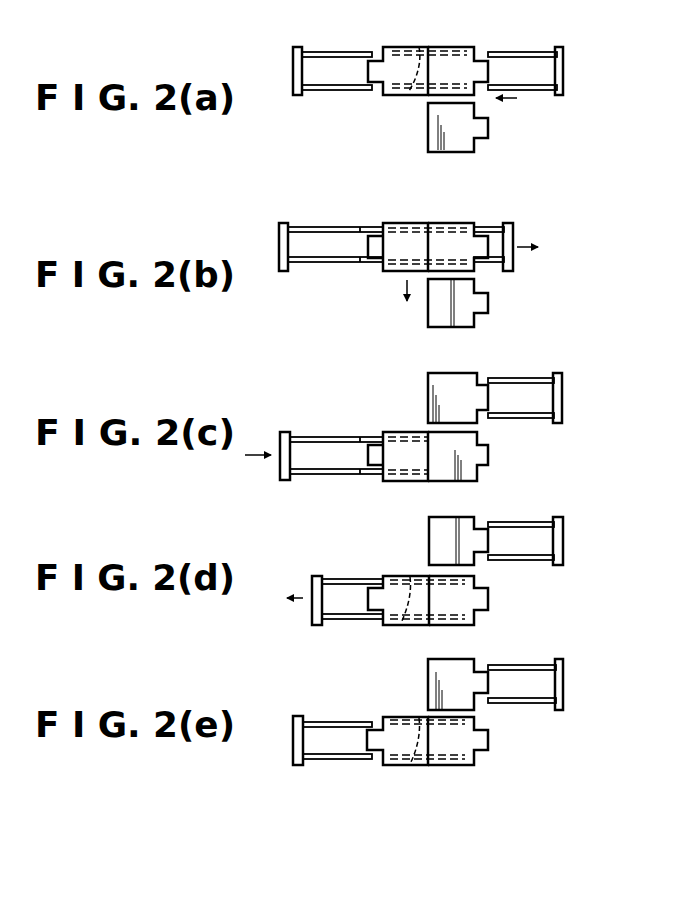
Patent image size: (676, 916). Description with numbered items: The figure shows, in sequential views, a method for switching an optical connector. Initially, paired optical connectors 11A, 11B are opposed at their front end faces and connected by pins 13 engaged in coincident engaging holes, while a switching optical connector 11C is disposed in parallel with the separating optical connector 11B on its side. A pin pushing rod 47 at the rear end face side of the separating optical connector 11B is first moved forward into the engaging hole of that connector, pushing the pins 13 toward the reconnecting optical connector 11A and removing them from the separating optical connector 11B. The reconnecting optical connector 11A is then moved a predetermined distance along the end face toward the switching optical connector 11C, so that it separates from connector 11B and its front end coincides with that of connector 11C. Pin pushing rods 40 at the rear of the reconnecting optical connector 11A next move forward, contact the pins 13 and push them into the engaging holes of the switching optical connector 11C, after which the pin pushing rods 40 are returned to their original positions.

In FIG. 2A, the pin pushing rod 40 is at (330, 86).
In FIG. 2B, the pin pushing rod 40 is at (305, 257).
In FIG. 2C, the pin pushing rod 40 is at (312, 470).
In FIG. 2D, the pin pushing rod 40 is at (338, 613).
In FIG. 2E, the pin pushing rod 40 is at (325, 755).
In FIG. 2A, the pin pushing rod 47 is at (528, 86).
In FIG. 2B, the pin pushing rod 47 is at (490, 262).
In FIG. 2C, the pin pushing rod 47 is at (518, 417).
In FIG. 2D, the pin pushing rod 47 is at (523, 553).
In FIG. 2E, the pin pushing rod 47 is at (523, 700).
In FIG. 2A, the reconnecting optical connector 11A is at (383, 49).
In FIG. 2B, the reconnecting optical connector 11A is at (397, 240).
In FIG. 2C, the reconnecting optical connector 11A is at (402, 452).
In FIG. 2D, the reconnecting optical connector 11A is at (398, 594).
In FIG. 2E, the reconnecting optical connector 11A is at (398, 730).
In FIG. 2A, the separating optical connector 11B is at (472, 49).
In FIG. 2B, the separating optical connector 11B is at (457, 240).
In FIG. 2C, the separating optical connector 11B is at (465, 382).
In FIG. 2D, the separating optical connector 11B is at (460, 522).
In FIG. 2E, the separating optical connector 11B is at (447, 670).
In FIG. 2A, the switching optical connector 11C is at (464, 144).
In FIG. 2B, the switching optical connector 11C is at (462, 316).
In FIG. 2C, the switching optical connector 11C is at (477, 470).
In FIG. 2D, the switching optical connector 11C is at (467, 605).
In FIG. 2E, the switching optical connector 11C is at (463, 743).
In FIG. 2A, the pin 13 is at (414, 47).
In FIG. 2B, the pin 13 is at (369, 236).
In FIG. 2C, the pin 13 is at (368, 446).
In FIG. 2D, the pin 13 is at (402, 624).
In FIG. 2E, the pin 13 is at (412, 766).